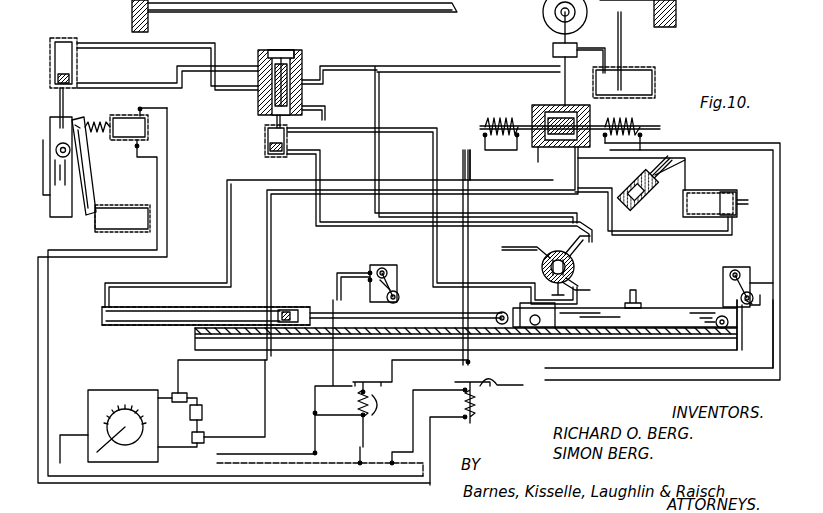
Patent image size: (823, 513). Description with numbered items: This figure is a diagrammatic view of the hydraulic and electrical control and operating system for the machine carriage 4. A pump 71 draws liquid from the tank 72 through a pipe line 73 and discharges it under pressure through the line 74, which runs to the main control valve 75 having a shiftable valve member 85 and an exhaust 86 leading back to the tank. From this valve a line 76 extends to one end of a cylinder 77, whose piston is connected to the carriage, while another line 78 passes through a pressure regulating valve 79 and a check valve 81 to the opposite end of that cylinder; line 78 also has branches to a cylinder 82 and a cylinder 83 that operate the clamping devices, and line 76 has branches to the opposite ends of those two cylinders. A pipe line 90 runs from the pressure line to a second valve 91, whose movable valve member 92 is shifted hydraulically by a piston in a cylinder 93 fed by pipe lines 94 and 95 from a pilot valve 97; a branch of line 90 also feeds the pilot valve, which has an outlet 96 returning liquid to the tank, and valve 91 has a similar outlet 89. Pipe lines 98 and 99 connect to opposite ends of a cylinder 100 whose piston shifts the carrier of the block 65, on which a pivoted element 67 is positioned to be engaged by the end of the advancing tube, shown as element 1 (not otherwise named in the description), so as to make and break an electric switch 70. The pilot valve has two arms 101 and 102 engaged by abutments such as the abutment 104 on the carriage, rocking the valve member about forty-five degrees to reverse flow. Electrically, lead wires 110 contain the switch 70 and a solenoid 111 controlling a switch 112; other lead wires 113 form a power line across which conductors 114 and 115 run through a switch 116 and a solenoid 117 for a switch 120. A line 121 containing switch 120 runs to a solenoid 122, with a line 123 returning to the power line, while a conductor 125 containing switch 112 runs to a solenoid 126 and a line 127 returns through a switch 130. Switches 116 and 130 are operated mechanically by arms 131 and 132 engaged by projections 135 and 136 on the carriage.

The shaft 1 is at (100, 233).
The carriage 4 is at (652, 312).
The block 65 is at (50, 166).
The pivoted element 67 is at (94, 172).
The electric switch 70 is at (130, 118).
The pump 71 is at (543, 14).
The tank 72 is at (656, 72).
The pipe line 73 is at (623, 45).
The pressure line 74 is at (552, 38).
The main control valve 75 is at (585, 48).
The line 76 is at (104, 298).
The cylinder 77 is at (106, 326).
The line 78 is at (576, 172).
The pressure regulating valve 79 is at (100, 382).
The check valve 81 is at (202, 412).
The cylinder 82 is at (650, 182).
The cylinder 83 is at (713, 190).
The shiftable valve member 85 is at (562, 106).
The exhaust 86 is at (539, 163).
The outlet 89 is at (325, 110).
The pipe line 90 is at (436, 66).
The valve 91 is at (288, 52).
The movable valve member 92 is at (285, 56).
The cylinder 93 is at (265, 136).
The pipe line 94 is at (346, 130).
The pipe line 95 is at (322, 166).
The outlet 96 is at (535, 255).
The pilot valve 97 is at (560, 252).
The pipe line 98 is at (180, 43).
The pipe line 99 is at (192, 88).
The cylinder 100 is at (58, 38).
The arm 101 is at (580, 290).
The arm 102 is at (575, 280).
The abutment 104 is at (638, 293).
The lead wires 110 is at (141, 108).
The solenoid 111 is at (480, 414).
The switch 112 is at (512, 388).
The lead wires 113 is at (278, 452).
The conductor 114 is at (353, 273).
The conductor 115 is at (355, 450).
The switch 116 is at (400, 256).
The solenoid 117 is at (358, 418).
The switch 120 is at (381, 381).
The line 121 is at (460, 148).
The solenoid 122 is at (487, 118).
The line 123 is at (475, 158).
The conductor 125 is at (642, 380).
The solenoid 126 is at (636, 122).
The line 127 is at (776, 208).
The switch 130 is at (733, 267).
The arm 131 is at (392, 287).
The arm 132 is at (740, 300).
The projection 135 is at (548, 340).
The projection 136 is at (739, 350).